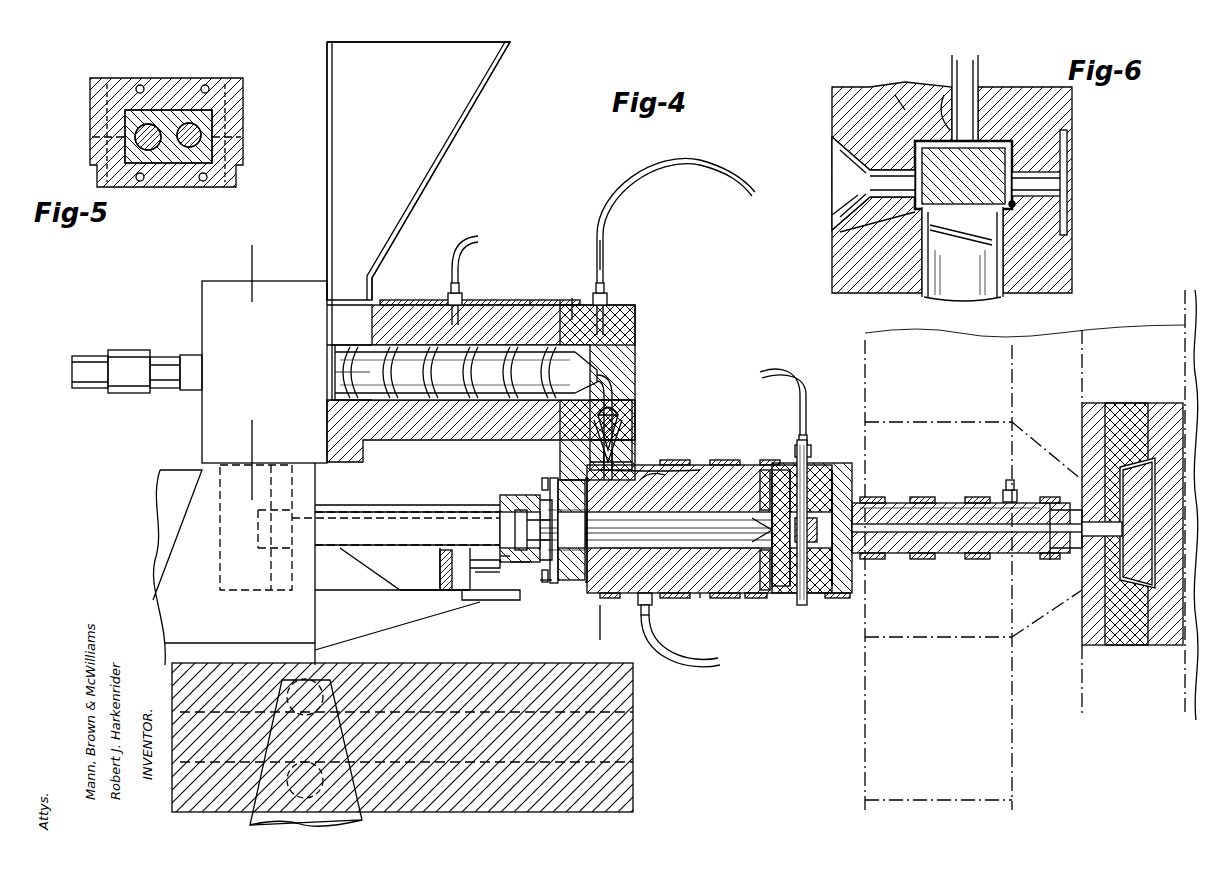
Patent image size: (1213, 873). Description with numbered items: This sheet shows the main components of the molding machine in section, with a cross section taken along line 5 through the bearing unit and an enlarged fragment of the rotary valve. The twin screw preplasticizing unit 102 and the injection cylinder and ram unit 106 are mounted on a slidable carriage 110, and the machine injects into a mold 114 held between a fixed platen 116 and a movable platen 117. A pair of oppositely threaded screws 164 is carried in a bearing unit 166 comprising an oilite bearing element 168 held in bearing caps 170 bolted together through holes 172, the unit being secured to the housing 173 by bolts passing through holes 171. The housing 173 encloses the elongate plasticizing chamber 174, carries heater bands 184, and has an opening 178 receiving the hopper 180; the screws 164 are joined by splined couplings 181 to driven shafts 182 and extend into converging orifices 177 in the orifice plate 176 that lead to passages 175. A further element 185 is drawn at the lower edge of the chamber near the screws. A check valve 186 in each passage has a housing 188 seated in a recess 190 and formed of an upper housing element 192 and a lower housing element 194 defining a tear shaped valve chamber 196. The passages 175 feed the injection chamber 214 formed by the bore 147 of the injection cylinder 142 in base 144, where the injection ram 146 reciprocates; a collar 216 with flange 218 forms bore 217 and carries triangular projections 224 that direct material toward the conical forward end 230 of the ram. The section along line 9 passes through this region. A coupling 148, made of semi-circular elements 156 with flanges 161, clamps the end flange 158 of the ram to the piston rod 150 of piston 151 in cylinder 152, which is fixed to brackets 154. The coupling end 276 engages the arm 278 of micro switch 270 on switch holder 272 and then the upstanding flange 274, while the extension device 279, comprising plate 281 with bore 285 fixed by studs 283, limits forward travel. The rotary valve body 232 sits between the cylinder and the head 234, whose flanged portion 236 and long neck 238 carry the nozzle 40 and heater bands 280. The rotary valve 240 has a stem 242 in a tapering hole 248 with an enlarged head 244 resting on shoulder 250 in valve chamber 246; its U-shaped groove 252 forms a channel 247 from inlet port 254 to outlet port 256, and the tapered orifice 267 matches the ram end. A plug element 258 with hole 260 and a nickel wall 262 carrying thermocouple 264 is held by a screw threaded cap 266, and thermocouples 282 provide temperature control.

In FIG. 4, the section line 5— 5 is at (242, 489).
In FIG. 4, the section line 9— 9 is at (590, 619).
In FIG. 4, the nozzle 40 is at (1065, 565).
In FIG. 4, the twin screw preplasticizing unit 102 is at (519, 292).
In FIG. 4, the injection cylinder and ram unit 106 is at (718, 690).
In FIG. 4, the carriage 110 is at (633, 805).
In FIG. 4, the mold 114 is at (1115, 648).
In FIG. 4, the fixed platen 116 is at (945, 800).
In FIG. 4, the movable platen 117 is at (1185, 310).
In FIG. 4, the injection cylinder 142 is at (712, 478).
In FIG. 4, the base 144 is at (648, 665).
In FIG. 4, the injection ram 146 is at (660, 550).
In FIG. 4, the bore 147 is at (740, 520).
In FIG. 4, the coupling 148 is at (496, 488).
In FIG. 4, the piston rod 150 is at (358, 525).
In FIG. 4, the piston 151 is at (220, 585).
In FIG. 4, the cylinder 152 is at (175, 478).
In FIG. 4, the brackets 154 is at (305, 632).
In FIG. 4, the semi-circular elements 156 is at (518, 572).
In FIG. 4, the end flange 158 is at (535, 530).
In FIG. 4, the flanges 161 is at (500, 497).
In FIG. 4, the screws 164 is at (340, 373).
In FIG. 4, the bearing unit 166 is at (296, 290).
In FIG. 5, the oilite bearing element 168 is at (136, 110).
In FIG. 5, the bearing caps 170 is at (243, 130).
In FIG. 5, the holes 171 is at (143, 86).
In FIG. 5, the holes 172 is at (104, 110).
In FIG. 4, the housing 173 is at (540, 300).
In FIG. 4, the plasticizing chamber 174 is at (400, 372).
In FIG. 4, the passages 175 is at (612, 380).
In FIG. 4, the orifice plate 176 is at (635, 312).
In FIG. 4, the converging orifices 177 is at (573, 294).
In FIG. 4, the opening 178 is at (332, 330).
In FIG. 4, the hopper 180 is at (445, 160).
In FIG. 4, the splined couplings 181 is at (133, 355).
In FIG. 4, the shafts 182 is at (86, 355).
In FIG. 4, the heater bands 184 is at (525, 303).
In FIG. 4, the liner 185 is at (335, 392).
In FIG. 4, the check valve 186 is at (632, 412).
In FIG. 4, the valve housing 188 is at (632, 444).
In FIG. 4, the recesses 190 is at (618, 412).
In FIG. 4, the upper housing element 192 is at (620, 422).
In FIG. 4, the lower housing element 194 is at (622, 432).
In FIG. 4, the valve chamber 196 is at (632, 458).
In FIG. 4, the injection chamber 214 is at (705, 555).
In FIG. 4, the collar 216 is at (560, 592).
In FIG. 4, the bore 217 is at (600, 540).
In FIG. 4, the flange 218 is at (572, 478).
In FIG. 4, the triangular projections 224 is at (680, 466).
In FIG. 4, the forward end of ram 230 is at (745, 600).
In FIG. 6, the rotary valve body 232 is at (1072, 258).
In FIG. 4, the rotary valve body 232 is at (820, 605).
In FIG. 4, the injection cylinder head 234 is at (900, 555).
In FIG. 4, the flanged portion 236 is at (852, 586).
In FIG. 4, the neck 238 is at (975, 555).
In FIG. 6, the rotary valve 240 is at (1050, 180).
In FIG. 4, the rotary valve 240 is at (852, 492).
In FIG. 6, the stem 242 is at (925, 305).
In FIG. 4, the stem 242 is at (805, 605).
In FIG. 6, the enlarged head 244 is at (865, 230).
In FIG. 6, the valve chamber 246 is at (868, 172).
In FIG. 6, the channel 247 is at (915, 142).
In FIG. 6, the tapering hole 248 is at (920, 281).
In FIG. 6, the shoulder 250 is at (1015, 205).
In FIG. 6, the U-shaped groove 252 is at (995, 135).
In FIG. 6, the inlet port 254 is at (870, 184).
In FIG. 6, the outlet port 256 is at (1067, 172).
In FIG. 6, the plug element 258 is at (892, 80).
In FIG. 4, the plug element 258 is at (852, 478).
In FIG. 6, the hole 260 is at (968, 70).
In FIG. 4, the hole 260 is at (500, 527).
In FIG. 6, the plug or wall 262 is at (936, 90).
In FIG. 6, the thermocouple 264 is at (962, 62).
In FIG. 4, the thermocouple 264 is at (770, 498).
In FIG. 4, the screw threaded cap 266 is at (830, 438).
In FIG. 6, the tapered orifice 267 is at (845, 205).
In FIG. 4, the micro switch 270 is at (475, 600).
In FIG. 4, the switch holder 272 is at (480, 568).
In FIG. 4, the upstanding flange 274 is at (428, 570).
In FIG. 4, the end of coupling 276 is at (505, 560).
In FIG. 4, the arm 278 is at (488, 574).
In FIG. 4, the extension device 279 is at (540, 598).
In FIG. 4, the heater bands 280 is at (630, 612).
In FIG. 4, the plate 281 is at (530, 498).
In FIG. 4, the thermocouples 282 is at (462, 298).
In FIG. 4, the studs 283 is at (545, 464).
In FIG. 4, the bore 285 is at (566, 518).